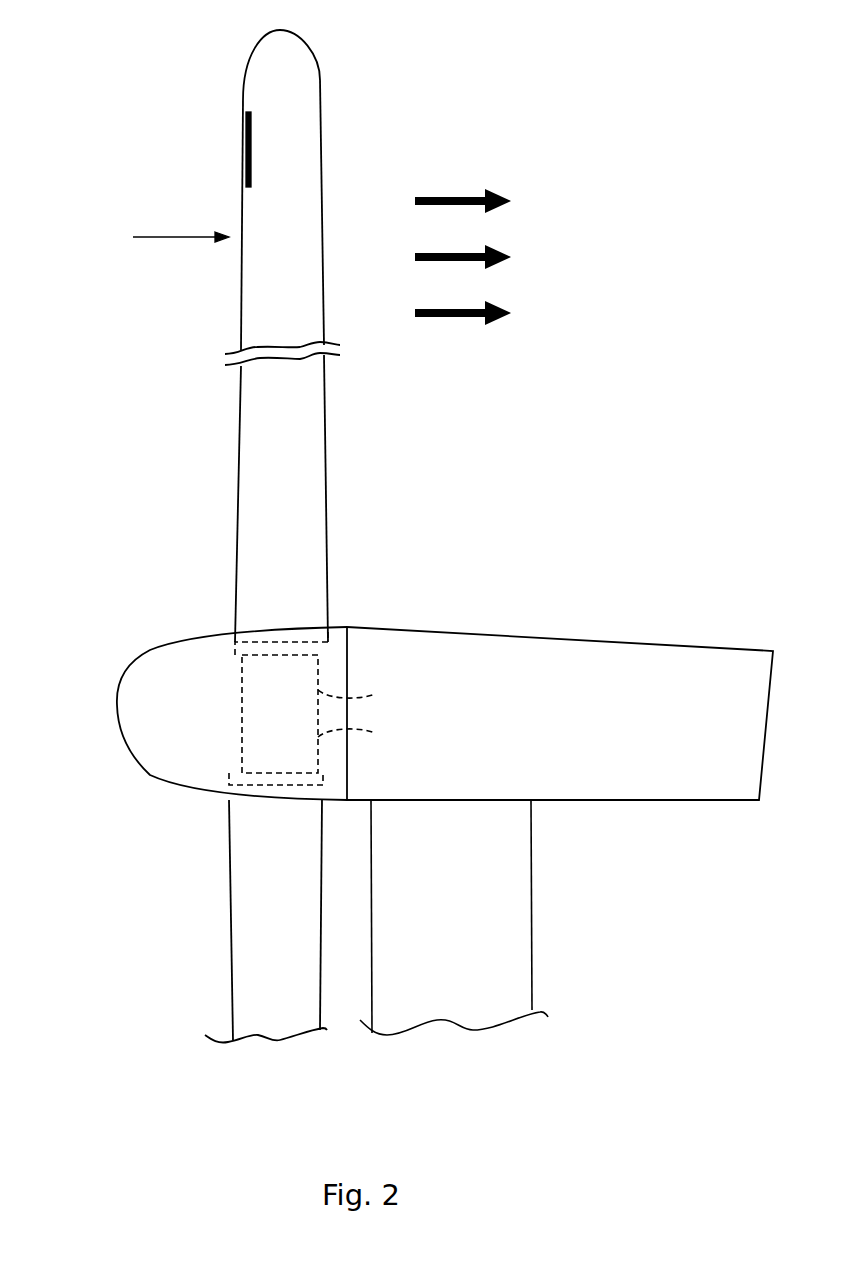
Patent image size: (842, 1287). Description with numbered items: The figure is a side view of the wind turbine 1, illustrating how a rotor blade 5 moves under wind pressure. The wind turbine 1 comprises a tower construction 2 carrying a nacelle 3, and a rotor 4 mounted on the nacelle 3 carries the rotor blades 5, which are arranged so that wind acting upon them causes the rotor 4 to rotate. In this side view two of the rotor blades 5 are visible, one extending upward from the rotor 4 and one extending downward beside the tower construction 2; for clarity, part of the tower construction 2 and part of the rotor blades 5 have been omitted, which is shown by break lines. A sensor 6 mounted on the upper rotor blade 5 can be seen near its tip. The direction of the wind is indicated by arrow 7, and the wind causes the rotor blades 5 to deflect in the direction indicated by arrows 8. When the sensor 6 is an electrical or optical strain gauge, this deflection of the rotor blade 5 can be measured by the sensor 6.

The wind turbine 1 is at (399, 536).
The tower construction 2 is at (490, 930).
The nacelle 3 is at (658, 687).
The rotor 4 is at (152, 721).
The rotor blade 5 is at (260, 536).
The sensor 6 is at (247, 147).
The arrow indicating wind direction 7 is at (175, 237).
The arrows indicating blade deflection direction 8 is at (520, 203).